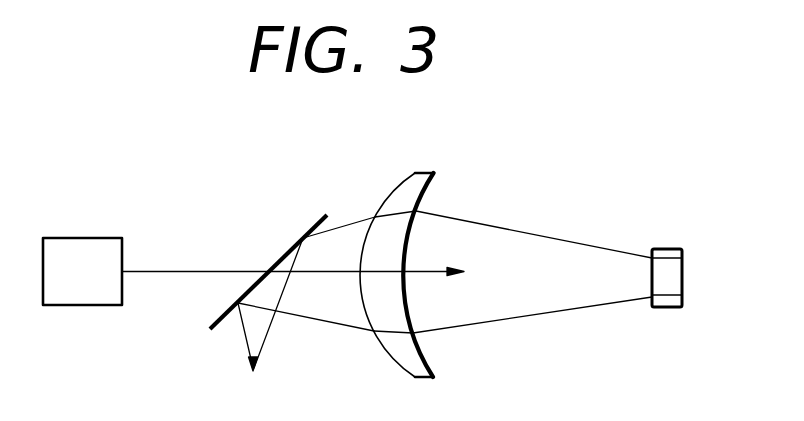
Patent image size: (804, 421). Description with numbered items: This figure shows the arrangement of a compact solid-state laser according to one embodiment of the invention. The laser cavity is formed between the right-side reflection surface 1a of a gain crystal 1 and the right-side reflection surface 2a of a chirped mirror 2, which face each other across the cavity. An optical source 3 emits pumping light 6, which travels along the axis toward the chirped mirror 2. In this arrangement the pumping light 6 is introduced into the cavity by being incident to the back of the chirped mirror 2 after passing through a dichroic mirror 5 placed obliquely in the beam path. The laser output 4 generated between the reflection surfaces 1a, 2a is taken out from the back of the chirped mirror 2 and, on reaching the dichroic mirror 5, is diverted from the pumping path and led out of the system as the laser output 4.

The gain crystal 1 is at (698, 248).
The right-side reflection surface of gain crystal 1a is at (683, 268).
The chirped mirror 2 is at (429, 243).
The right-side reflection surface of chirped mirror 2a is at (422, 202).
The optical source of pumping light 3 is at (97, 238).
The laser output 4 is at (257, 338).
The dichroic mirror 5 is at (283, 254).
The pumping light 6 is at (163, 273).